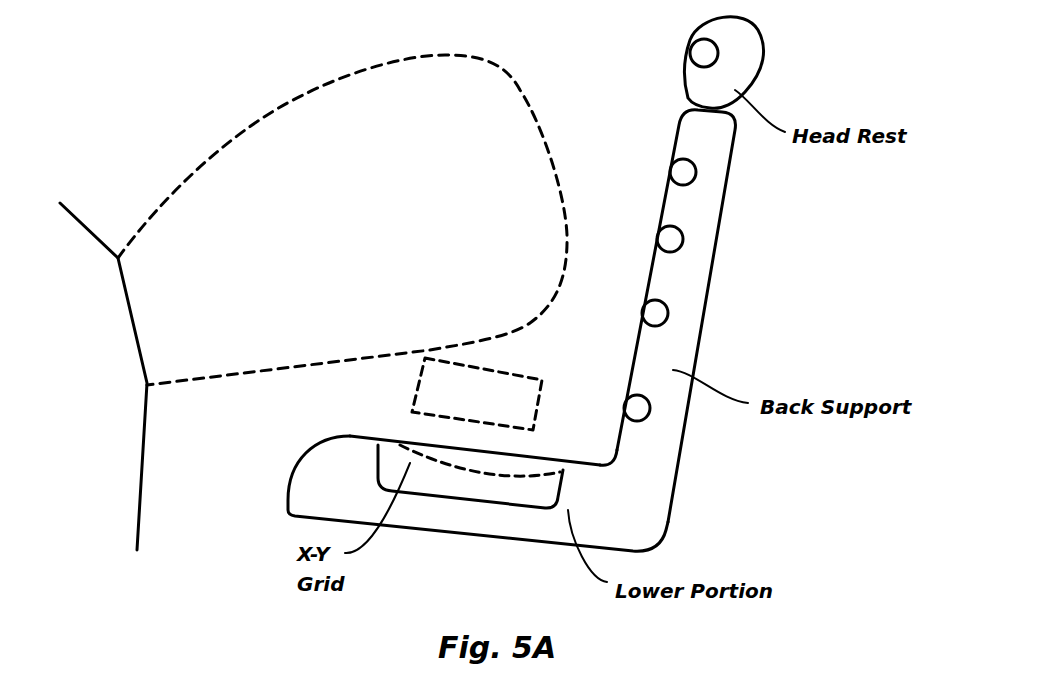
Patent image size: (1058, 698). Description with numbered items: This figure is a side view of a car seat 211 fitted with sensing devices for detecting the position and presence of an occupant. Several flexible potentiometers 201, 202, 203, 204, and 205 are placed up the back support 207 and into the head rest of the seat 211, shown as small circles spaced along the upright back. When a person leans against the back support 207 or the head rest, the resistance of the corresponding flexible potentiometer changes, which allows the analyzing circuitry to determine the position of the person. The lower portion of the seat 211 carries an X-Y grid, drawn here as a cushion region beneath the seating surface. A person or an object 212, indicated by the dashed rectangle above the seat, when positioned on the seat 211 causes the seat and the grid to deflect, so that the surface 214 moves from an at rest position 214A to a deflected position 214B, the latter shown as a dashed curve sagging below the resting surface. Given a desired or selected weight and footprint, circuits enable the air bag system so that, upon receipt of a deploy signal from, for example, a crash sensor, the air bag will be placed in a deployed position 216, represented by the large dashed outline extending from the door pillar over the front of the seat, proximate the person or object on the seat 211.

The flexible potentiometer 201 is at (650, 408).
The flexible potentiometer 202 is at (668, 313).
The flexible potentiometer 203 is at (683, 239).
The flexible potentiometer 204 is at (696, 172).
The flexible potentiometer 205 is at (718, 53).
The back support 207 is at (707, 300).
The seat 211 is at (476, 310).
The object 212 is at (515, 375).
The surface 214 is at (402, 444).
The at rest position 214A is at (530, 460).
The deflected position 214B is at (505, 478).
The deployed position 216 is at (303, 95).